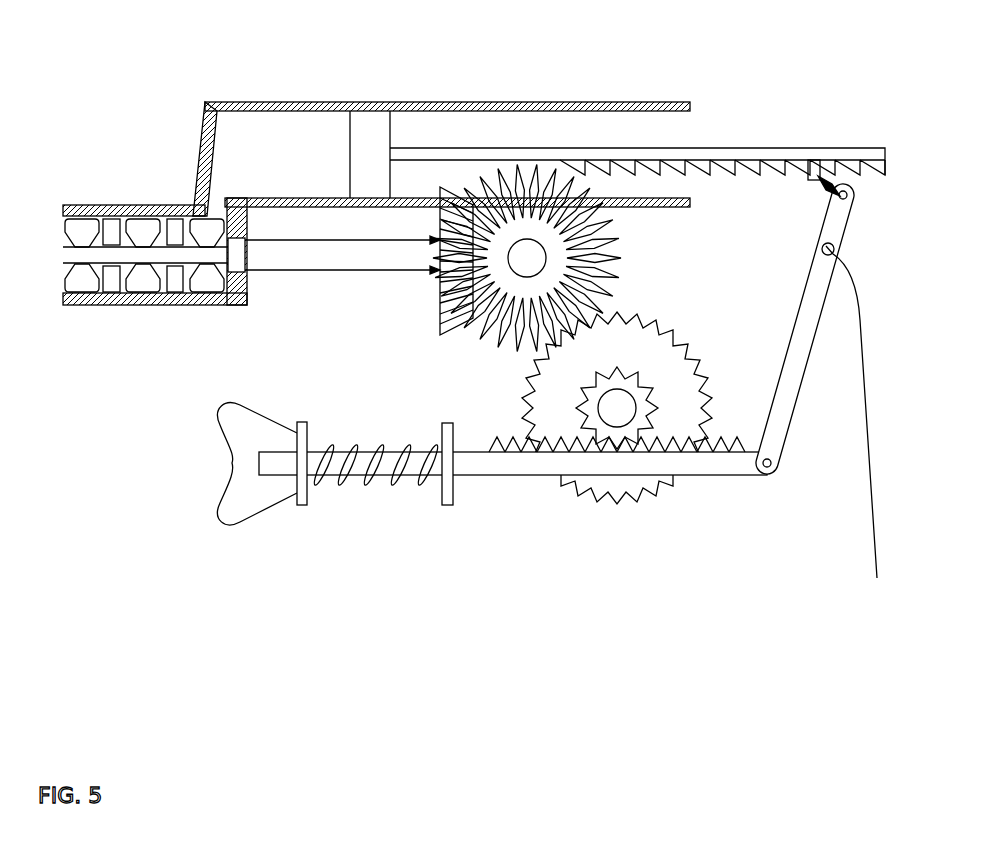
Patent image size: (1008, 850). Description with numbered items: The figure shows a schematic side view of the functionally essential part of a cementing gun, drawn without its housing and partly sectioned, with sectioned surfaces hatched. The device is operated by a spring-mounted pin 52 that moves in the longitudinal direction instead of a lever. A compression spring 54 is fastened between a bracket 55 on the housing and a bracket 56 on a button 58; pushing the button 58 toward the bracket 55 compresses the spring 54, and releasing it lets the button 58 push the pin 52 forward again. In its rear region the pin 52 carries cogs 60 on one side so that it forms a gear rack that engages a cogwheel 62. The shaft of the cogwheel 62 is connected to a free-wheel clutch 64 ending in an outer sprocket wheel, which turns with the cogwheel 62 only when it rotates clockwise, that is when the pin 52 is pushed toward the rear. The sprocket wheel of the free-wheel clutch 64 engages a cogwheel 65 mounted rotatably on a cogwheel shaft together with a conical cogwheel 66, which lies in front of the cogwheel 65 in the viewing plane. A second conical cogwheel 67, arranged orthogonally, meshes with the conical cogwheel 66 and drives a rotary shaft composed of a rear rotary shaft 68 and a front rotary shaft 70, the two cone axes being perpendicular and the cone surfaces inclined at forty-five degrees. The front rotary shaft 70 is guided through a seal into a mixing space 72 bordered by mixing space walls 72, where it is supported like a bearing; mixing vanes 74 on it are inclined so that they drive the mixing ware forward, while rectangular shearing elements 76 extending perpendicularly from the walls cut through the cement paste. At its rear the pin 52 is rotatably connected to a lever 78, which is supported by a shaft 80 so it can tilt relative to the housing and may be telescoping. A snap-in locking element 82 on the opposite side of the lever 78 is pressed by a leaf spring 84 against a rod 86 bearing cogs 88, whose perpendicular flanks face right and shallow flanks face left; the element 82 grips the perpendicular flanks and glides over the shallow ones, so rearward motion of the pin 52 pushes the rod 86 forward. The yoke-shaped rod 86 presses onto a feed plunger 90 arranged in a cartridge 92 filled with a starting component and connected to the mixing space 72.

The spring-mounted pin 52 is at (547, 467).
The spring 54 is at (372, 483).
The bracket 55 is at (448, 497).
The bracket 56 is at (303, 487).
The button 58 is at (245, 487).
The cogs 60 is at (677, 443).
The cogwheel 62 is at (623, 438).
The free-wheel clutch 64 is at (560, 405).
The cogwheel 65 is at (618, 264).
The conical cogwheel 66 is at (565, 177).
The second conical cogwheel 67 is at (455, 228).
The rear rotary shaft 68 is at (293, 253).
The front rotary shaft 70 is at (93, 253).
The mixing space 72 is at (167, 225).
The mixing vanes 74 is at (143, 227).
The shearing elements 76 is at (178, 227).
The lever 78 is at (777, 440).
The shaft 80 is at (858, 425).
The snap-in locking element 82 is at (840, 191).
The leaf spring 84 is at (813, 162).
The rod 86 is at (455, 153).
The cogs 88 is at (775, 162).
The feed plunger 90 is at (370, 160).
The cartridge 92 is at (328, 103).